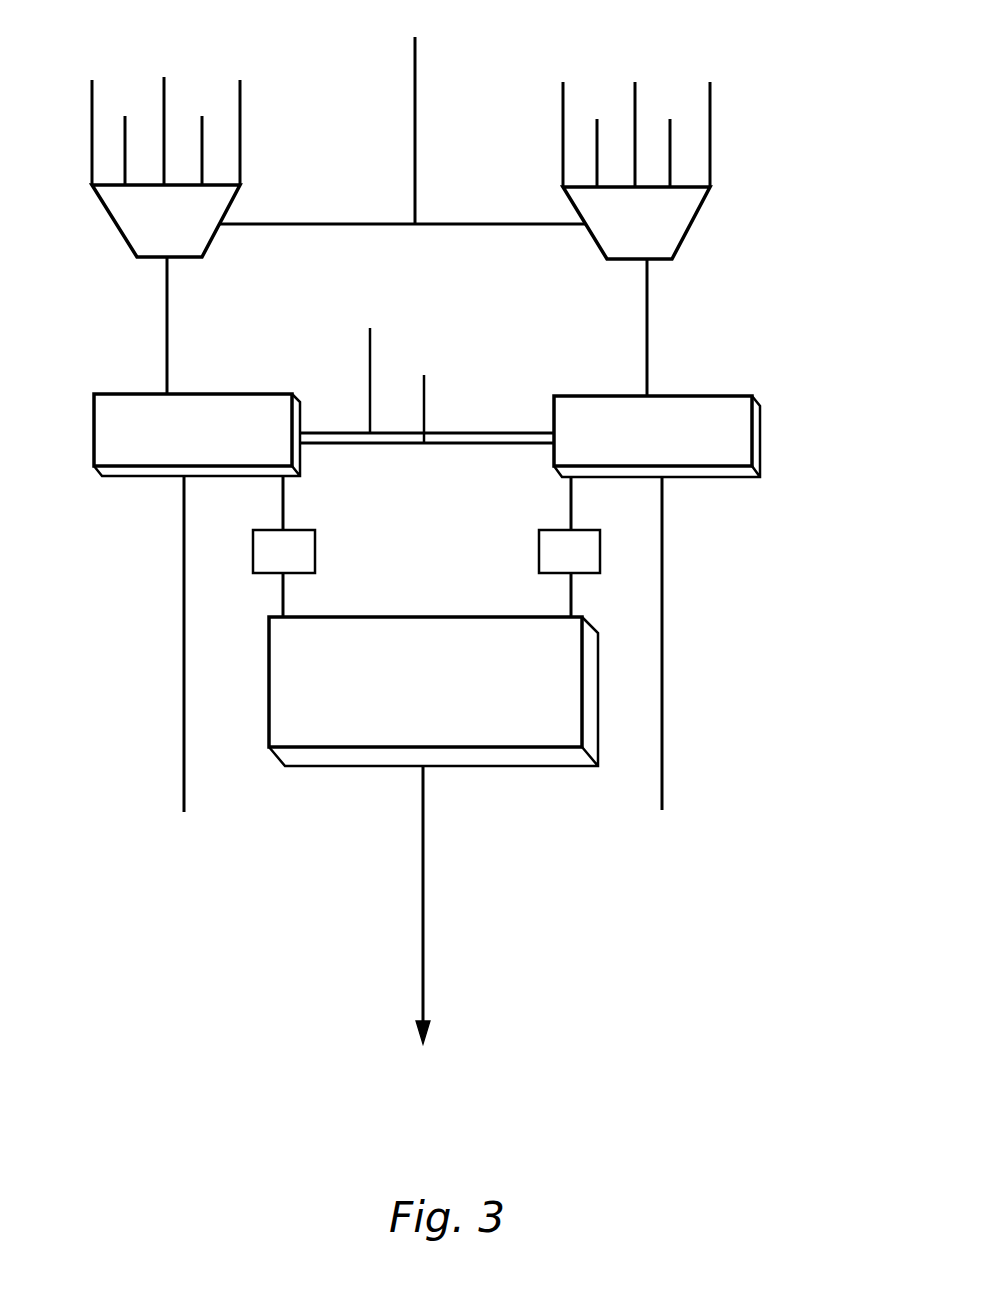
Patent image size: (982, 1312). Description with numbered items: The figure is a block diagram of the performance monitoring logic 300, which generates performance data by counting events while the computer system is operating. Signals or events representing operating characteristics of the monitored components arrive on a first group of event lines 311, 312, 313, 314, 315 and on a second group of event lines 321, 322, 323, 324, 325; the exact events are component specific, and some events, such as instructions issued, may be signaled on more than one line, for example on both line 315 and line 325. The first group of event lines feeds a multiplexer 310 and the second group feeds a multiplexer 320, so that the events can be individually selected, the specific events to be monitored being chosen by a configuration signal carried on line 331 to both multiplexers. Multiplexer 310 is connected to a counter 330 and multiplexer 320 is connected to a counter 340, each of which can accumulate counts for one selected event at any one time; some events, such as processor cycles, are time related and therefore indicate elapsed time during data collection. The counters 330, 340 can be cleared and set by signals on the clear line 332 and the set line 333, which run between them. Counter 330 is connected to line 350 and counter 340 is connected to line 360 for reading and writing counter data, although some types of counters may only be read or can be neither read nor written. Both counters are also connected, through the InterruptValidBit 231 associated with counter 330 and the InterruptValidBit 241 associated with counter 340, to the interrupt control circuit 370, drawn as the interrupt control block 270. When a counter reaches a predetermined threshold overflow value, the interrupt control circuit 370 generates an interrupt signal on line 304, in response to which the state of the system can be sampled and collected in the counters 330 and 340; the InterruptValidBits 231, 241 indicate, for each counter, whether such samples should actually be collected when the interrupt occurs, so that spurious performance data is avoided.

The performance monitoring logic 300 is at (827, 602).
The multiplexer 310 is at (122, 240).
The event line 311 is at (92, 115).
The event line 312 is at (130, 135).
The event line 313 is at (165, 114).
The event line 314 is at (203, 135).
The event line 315 is at (235, 115).
The multiplexer 320 is at (686, 232).
The event line 321 is at (563, 120).
The event line 322 is at (598, 137).
The event line 323 is at (637, 117).
The event line 324 is at (672, 137).
The event line 325 is at (710, 120).
The configuration signal line 331 is at (416, 141).
The counter 330 is at (92, 453).
The counter 340 is at (762, 442).
The clear line 332 is at (370, 340).
The set line 333 is at (425, 388).
The read/write line 350 is at (182, 670).
The read/write line 360 is at (664, 650).
The InterruptValidBit 231 is at (316, 541).
The InterruptValidBit 241 is at (538, 548).
The interrupt control 270 is at (598, 702).
The interrupt control circuit 370 is at (342, 736).
The interrupt signal line 304 is at (425, 848).